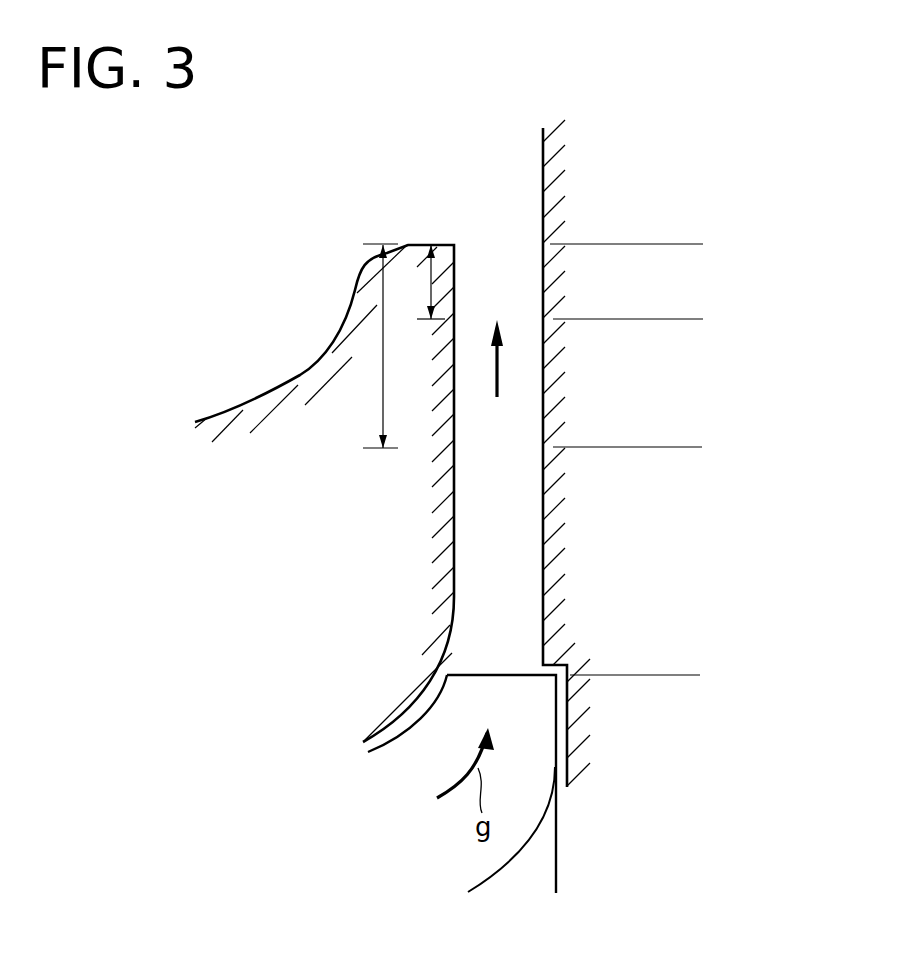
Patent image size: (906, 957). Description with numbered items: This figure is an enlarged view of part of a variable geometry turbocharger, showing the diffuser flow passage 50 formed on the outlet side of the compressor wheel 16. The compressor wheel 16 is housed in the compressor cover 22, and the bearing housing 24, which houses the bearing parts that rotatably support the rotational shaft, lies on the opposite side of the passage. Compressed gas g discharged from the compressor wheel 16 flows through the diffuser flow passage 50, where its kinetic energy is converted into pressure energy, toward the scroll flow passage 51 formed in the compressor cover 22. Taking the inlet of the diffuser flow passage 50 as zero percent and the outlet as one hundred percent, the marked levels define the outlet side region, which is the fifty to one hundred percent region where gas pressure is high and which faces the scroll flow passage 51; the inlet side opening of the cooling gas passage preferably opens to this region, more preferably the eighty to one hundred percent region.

The compressor cover 22 is at (362, 337).
The compressor wheel 16 is at (428, 730).
The bearing housing 24 is at (584, 389).
The diffuser flow passage 50 is at (497, 495).
The scroll flow passage 51 is at (395, 164).